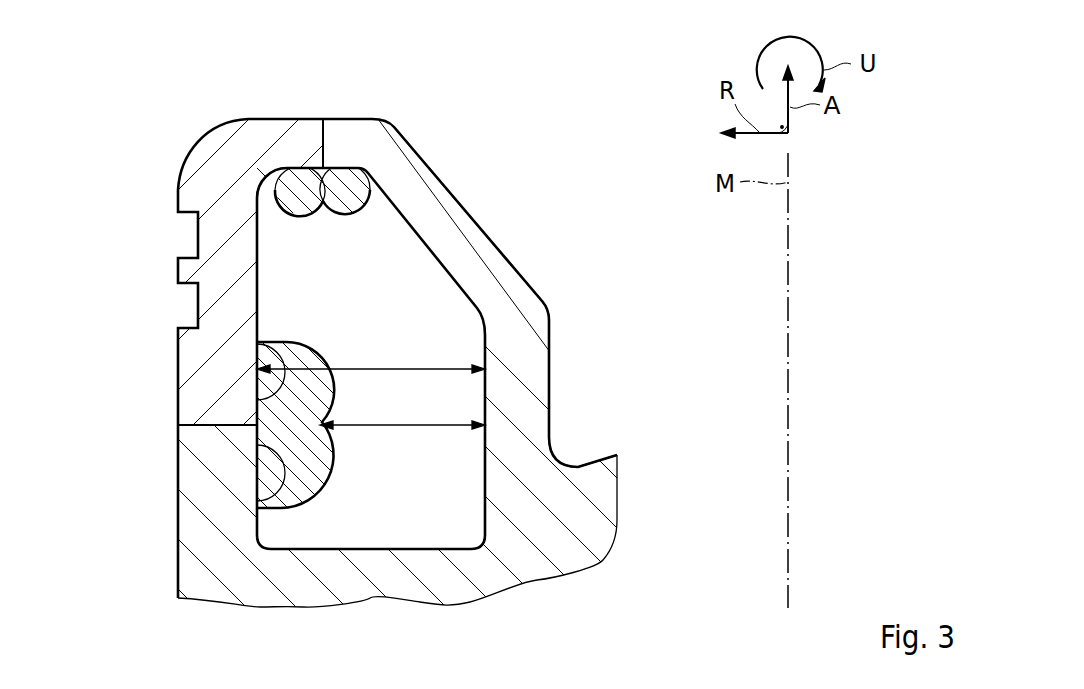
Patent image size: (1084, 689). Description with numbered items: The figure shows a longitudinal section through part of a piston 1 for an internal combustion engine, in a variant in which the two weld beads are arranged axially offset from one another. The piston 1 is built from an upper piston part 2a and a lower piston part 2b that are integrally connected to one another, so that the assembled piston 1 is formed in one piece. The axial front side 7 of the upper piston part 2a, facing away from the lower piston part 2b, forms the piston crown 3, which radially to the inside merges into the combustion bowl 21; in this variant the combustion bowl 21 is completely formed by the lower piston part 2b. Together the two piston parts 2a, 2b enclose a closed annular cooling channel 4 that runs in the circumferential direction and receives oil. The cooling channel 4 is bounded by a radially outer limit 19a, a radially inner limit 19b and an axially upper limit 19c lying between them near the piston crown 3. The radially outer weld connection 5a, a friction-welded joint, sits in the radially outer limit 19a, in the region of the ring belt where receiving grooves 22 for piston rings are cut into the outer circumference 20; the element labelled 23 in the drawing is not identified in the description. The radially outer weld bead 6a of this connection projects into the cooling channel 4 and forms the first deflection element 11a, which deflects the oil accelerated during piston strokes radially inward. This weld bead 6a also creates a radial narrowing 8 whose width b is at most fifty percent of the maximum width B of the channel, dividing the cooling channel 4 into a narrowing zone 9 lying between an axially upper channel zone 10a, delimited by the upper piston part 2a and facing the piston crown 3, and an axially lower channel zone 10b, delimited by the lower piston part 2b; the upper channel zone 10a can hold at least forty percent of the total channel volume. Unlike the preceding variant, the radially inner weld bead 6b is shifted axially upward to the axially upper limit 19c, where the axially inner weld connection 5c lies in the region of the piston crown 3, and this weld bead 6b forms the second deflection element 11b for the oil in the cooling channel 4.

The piston 1 is at (584, 157).
The upper piston part 2a is at (186, 146).
The lower piston part 2b is at (168, 489).
The piston crown 3 is at (273, 118).
The cooling channel 4 is at (400, 277).
The radially outer weld connection 5a is at (257, 410).
The axially inner weld connection 5c is at (327, 142).
The radially outer weld bead 6a is at (191, 425).
The radially inner weld bead 6b is at (405, 167).
The axial front side 7 is at (308, 118).
The radial narrowing 8 is at (368, 412).
The narrowing zone 9 is at (396, 432).
The axially upper channel zone 10a is at (365, 268).
The axially lower channel zone 10b is at (367, 525).
The first deflection element 11a is at (294, 452).
The second deflection element 11b is at (348, 193).
The radially outer limit 19a is at (279, 507).
The radially inner limit 19b is at (477, 500).
The axially upper limit 19c is at (273, 184).
The outer circumference 20 is at (178, 545).
The combustion bowl 21 is at (547, 298).
The receiving groove 22 is at (197, 234).
The profiled section 23 is at (148, 268).